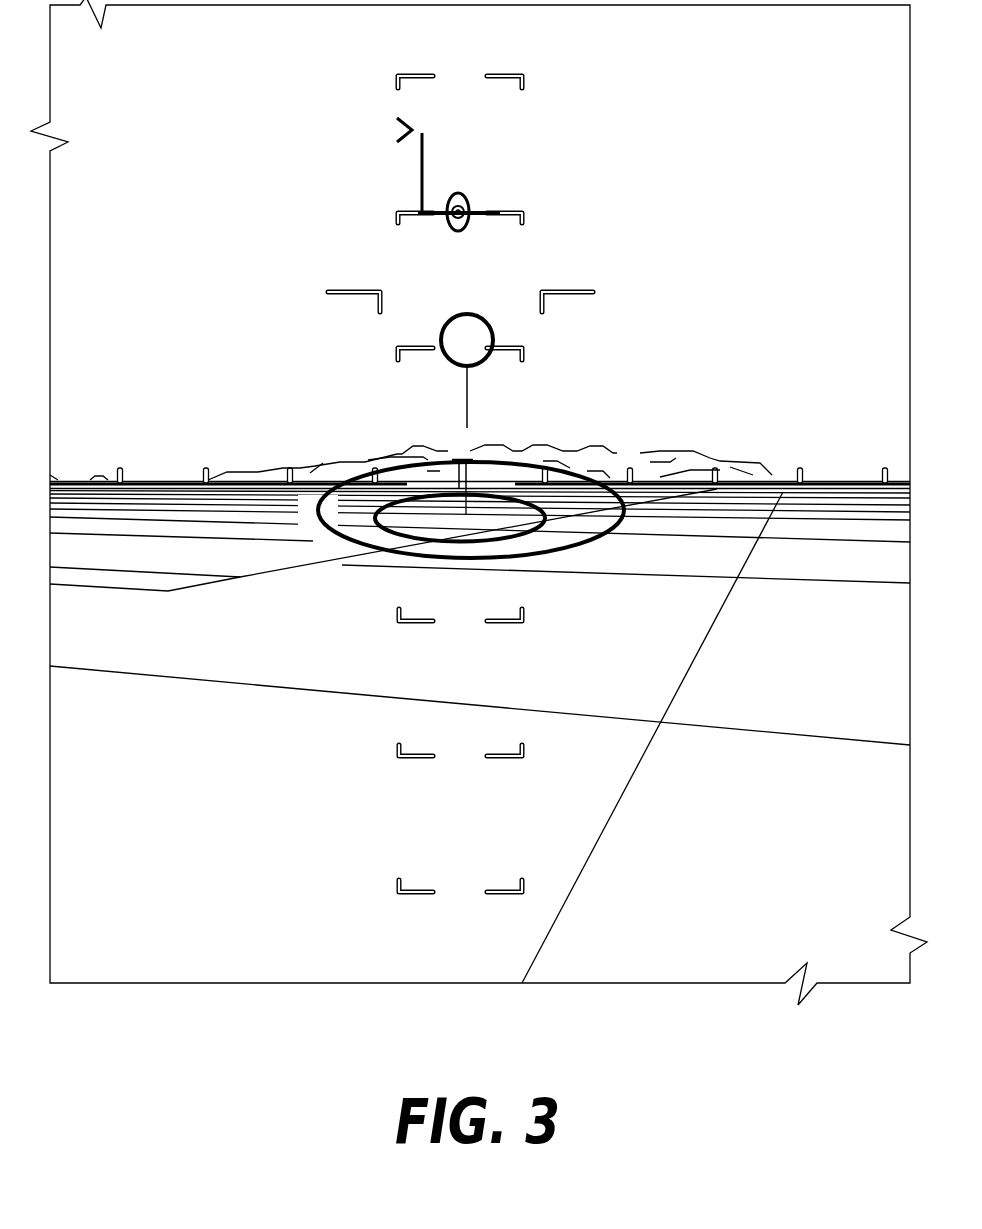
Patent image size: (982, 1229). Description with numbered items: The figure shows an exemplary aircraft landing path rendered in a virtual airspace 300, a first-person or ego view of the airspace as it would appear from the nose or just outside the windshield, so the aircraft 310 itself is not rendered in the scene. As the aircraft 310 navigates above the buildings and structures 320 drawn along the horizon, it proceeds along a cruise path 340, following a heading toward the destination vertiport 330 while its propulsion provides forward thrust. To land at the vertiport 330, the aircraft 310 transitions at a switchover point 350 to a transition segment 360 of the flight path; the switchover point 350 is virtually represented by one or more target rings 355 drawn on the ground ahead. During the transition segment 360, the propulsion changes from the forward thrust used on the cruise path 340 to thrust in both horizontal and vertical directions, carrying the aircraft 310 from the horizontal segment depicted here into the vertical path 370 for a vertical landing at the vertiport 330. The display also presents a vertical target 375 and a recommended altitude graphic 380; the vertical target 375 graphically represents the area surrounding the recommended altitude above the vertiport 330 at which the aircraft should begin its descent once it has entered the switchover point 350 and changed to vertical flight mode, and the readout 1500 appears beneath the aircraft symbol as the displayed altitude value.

The virtual airspace 300 is at (170, 125).
The aircraft 310 is at (620, 344).
The buildings and structures 320 is at (378, 431).
The destination vertiport 330 is at (492, 452).
The cruise path 340 is at (480, 737).
The switchover point 350 is at (333, 523).
The target rings 355 is at (338, 572).
The transition segment 360 is at (595, 517).
The vertical path 370 is at (482, 403).
The vertical target 375 is at (486, 209).
The recommended altitude graphic 380 is at (365, 274).
The altitude readout 1500 is at (465, 250).